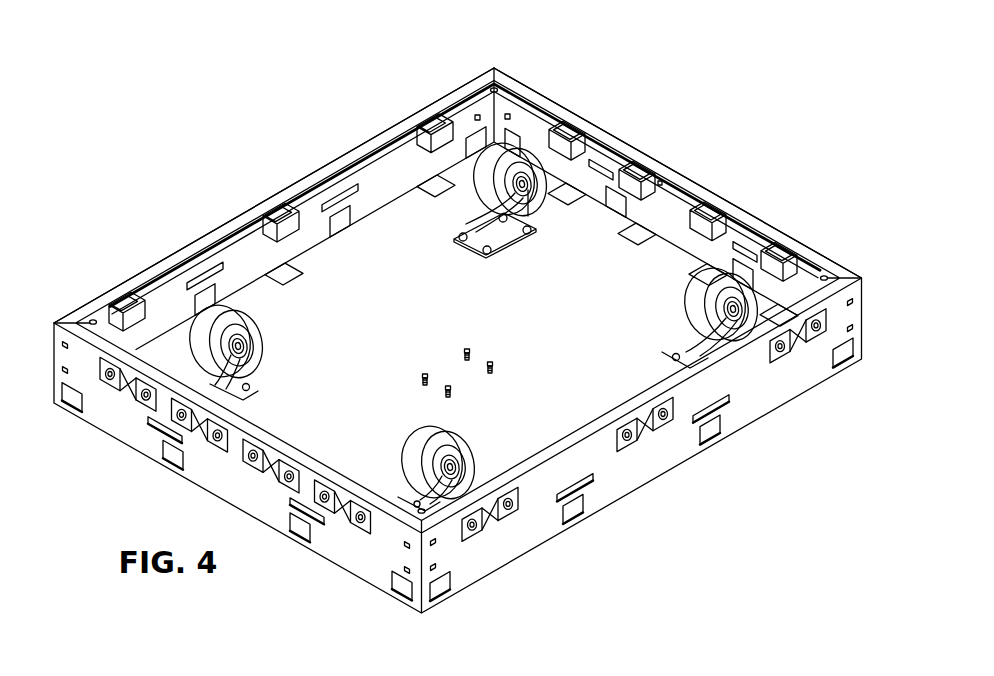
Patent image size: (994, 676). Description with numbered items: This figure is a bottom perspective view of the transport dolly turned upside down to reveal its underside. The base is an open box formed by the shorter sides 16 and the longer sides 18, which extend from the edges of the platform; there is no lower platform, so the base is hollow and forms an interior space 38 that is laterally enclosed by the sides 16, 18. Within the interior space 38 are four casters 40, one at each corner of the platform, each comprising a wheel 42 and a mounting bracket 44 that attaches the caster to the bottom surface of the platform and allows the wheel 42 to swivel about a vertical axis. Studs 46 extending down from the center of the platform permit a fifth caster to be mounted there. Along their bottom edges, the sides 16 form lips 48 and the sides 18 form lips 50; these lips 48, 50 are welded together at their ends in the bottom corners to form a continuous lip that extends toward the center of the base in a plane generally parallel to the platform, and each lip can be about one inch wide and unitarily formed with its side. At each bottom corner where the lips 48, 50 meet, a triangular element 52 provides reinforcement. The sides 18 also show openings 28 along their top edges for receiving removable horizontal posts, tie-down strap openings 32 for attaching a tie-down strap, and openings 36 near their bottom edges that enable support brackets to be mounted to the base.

The sides 16 is at (698, 188).
The sides 18 is at (313, 172).
The openings 28 is at (845, 357).
The tie-down strap openings 32 is at (728, 402).
The openings 36 is at (805, 344).
The interior space 38 is at (398, 178).
The casters 40 is at (449, 269).
The wheel 42 is at (518, 150).
The mounting bracket 44 is at (241, 390).
The studs 46 is at (490, 356).
The lips 48 is at (593, 130).
The lips 50 is at (253, 213).
The triangular element 52 is at (489, 86).